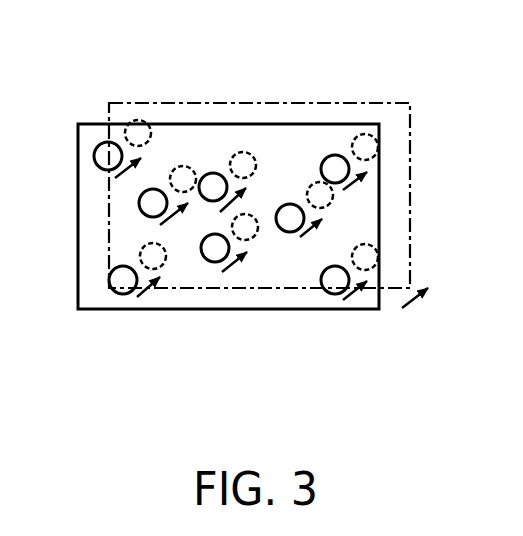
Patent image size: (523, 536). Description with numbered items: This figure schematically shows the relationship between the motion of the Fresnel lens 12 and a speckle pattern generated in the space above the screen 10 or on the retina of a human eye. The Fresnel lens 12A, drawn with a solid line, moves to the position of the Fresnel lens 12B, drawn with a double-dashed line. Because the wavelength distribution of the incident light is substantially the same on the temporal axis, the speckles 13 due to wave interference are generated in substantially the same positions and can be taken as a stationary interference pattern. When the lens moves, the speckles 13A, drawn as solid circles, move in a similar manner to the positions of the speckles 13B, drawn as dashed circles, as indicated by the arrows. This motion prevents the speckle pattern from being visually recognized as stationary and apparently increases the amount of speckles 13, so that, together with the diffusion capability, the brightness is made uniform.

The screen 10 is at (253, 219).
The Fresnel lens 12 is at (253, 263).
The Fresnel lens in first position 12A is at (333, 310).
The Fresnel lens in moved position 12B is at (393, 288).
The speckles 13 is at (236, 272).
The speckles at first position 13A is at (200, 262).
The speckles at moved position 13B is at (255, 240).